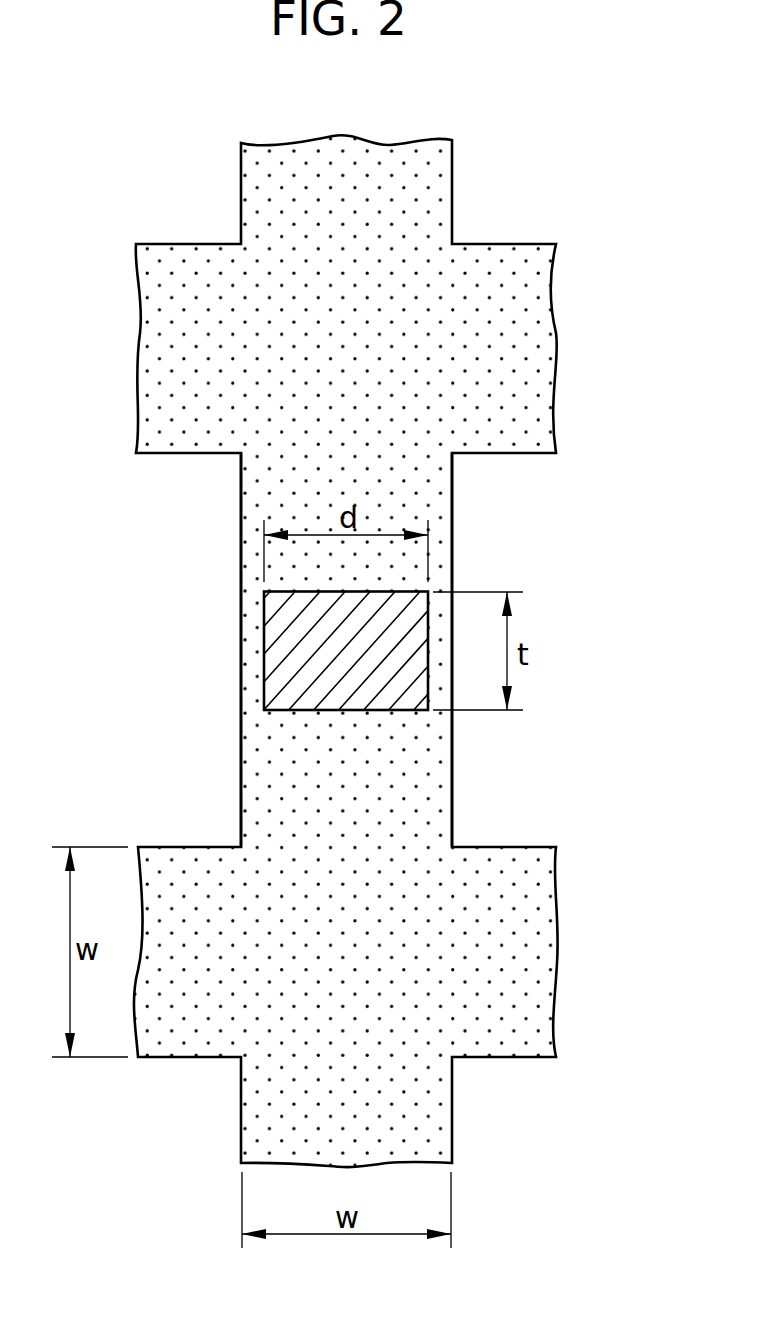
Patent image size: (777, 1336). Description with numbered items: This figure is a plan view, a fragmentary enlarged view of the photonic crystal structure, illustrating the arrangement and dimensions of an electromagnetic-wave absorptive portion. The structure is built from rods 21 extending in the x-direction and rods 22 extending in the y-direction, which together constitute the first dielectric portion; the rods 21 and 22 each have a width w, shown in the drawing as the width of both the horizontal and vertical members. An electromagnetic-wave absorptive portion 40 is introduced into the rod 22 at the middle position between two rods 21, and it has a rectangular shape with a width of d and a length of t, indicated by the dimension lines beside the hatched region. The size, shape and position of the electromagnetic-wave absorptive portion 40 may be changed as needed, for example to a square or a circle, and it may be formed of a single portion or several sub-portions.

The rods extending to the x-direction 21 is at (505, 955).
The rods extending to the y-direction 22 is at (300, 785).
The electromagnetic-wave absorptive portion 40 is at (293, 653).